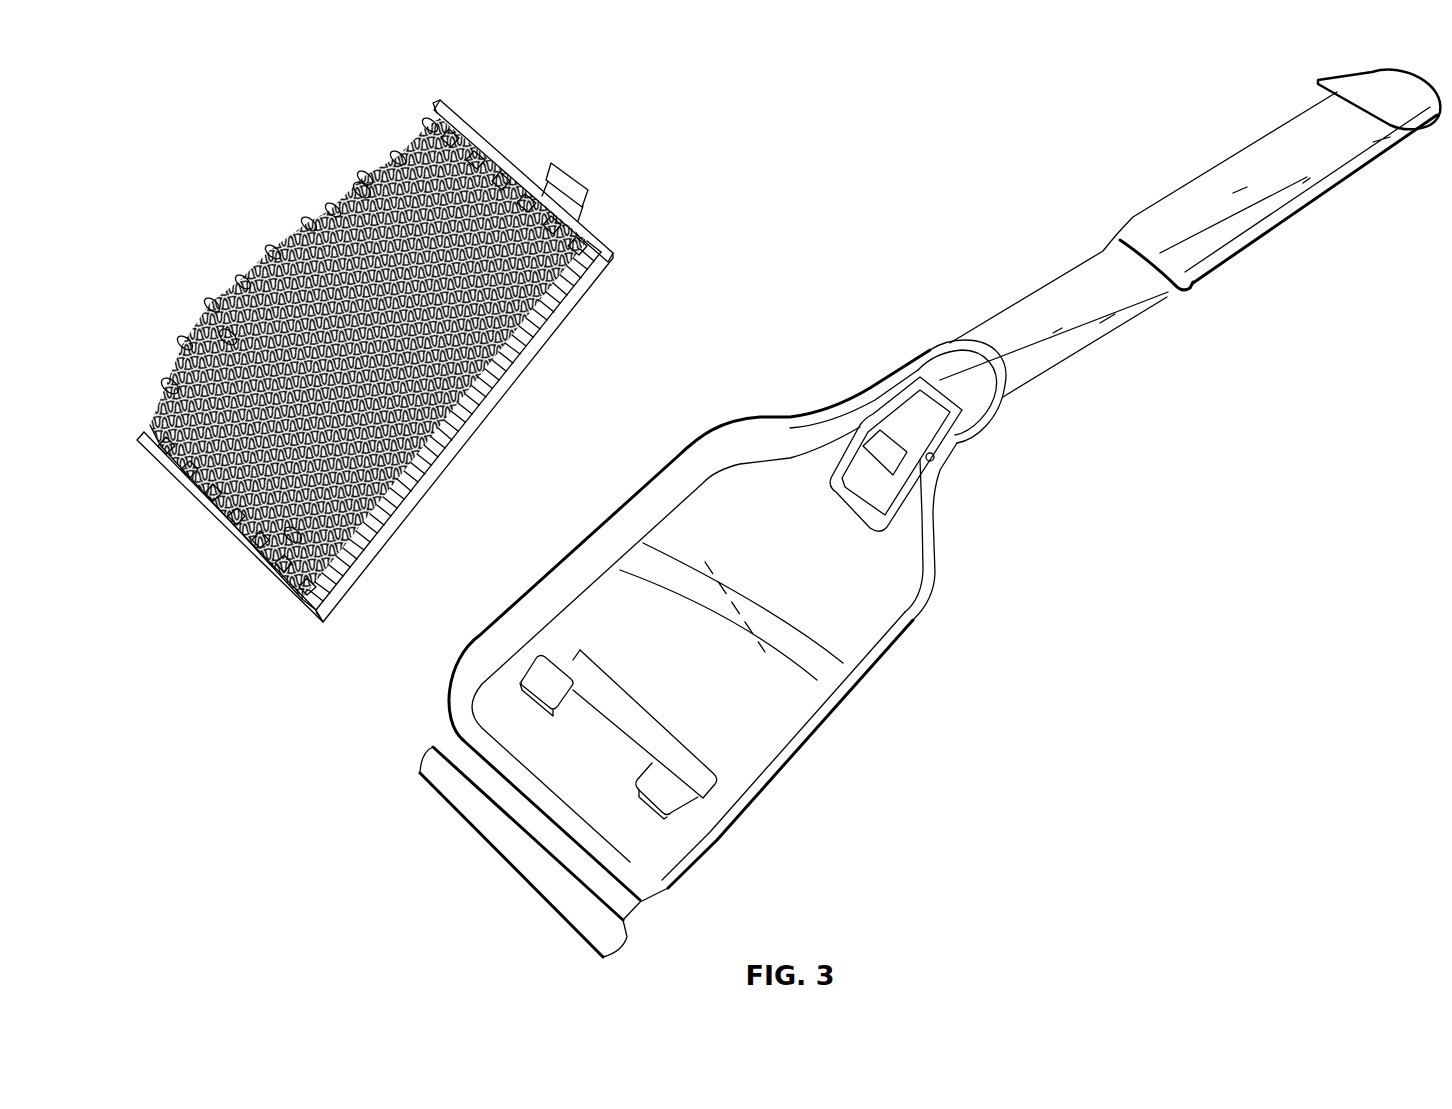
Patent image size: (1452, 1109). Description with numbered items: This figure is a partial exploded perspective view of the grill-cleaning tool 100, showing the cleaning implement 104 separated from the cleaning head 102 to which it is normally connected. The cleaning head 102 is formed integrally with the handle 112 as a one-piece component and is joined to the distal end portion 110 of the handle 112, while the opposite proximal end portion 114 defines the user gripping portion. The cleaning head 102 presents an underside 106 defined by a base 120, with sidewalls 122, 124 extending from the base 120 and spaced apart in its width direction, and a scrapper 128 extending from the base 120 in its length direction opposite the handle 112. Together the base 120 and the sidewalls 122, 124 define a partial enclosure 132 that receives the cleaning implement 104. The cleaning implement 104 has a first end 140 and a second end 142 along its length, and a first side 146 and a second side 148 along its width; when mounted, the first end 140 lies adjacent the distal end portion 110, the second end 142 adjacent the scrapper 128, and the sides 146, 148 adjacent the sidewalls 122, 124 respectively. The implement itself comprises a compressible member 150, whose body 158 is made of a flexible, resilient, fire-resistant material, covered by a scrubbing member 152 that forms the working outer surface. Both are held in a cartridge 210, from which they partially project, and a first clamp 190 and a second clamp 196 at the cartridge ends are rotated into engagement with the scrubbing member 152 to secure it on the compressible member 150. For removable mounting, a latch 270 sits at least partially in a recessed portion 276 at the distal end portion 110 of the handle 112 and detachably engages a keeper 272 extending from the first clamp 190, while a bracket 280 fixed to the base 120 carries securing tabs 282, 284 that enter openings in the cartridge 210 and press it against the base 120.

The grill-cleaning tool 100 is at (930, 513).
The cleaning head 102 is at (835, 708).
The cleaning implement 104 is at (317, 227).
The underside 106 is at (860, 630).
The distal end portion 110 is at (998, 422).
The handle 112 is at (1160, 315).
The proximal end portion 114 is at (1383, 157).
The base 120 is at (890, 593).
The sidewall 122 is at (697, 472).
The sidewall 124 is at (768, 777).
The scrapper 128 is at (517, 850).
The partial enclosure 132 is at (763, 478).
The first end 140 is at (593, 233).
The second end 142 is at (193, 503).
The first side 146 is at (227, 337).
The second side 148 is at (433, 490).
The compressible member 150 is at (362, 187).
The scrubbing member 152 is at (167, 383).
The body 158 is at (293, 533).
The first clamp 190 is at (493, 170).
The second clamp 196 is at (223, 530).
The cartridge 210 is at (517, 397).
The latch 270 is at (910, 430).
The keeper 272 is at (575, 177).
The recessed portion 276 is at (952, 355).
The bracket 280 is at (650, 730).
The securing tab 282 is at (672, 800).
The securing tab 284 is at (533, 675).